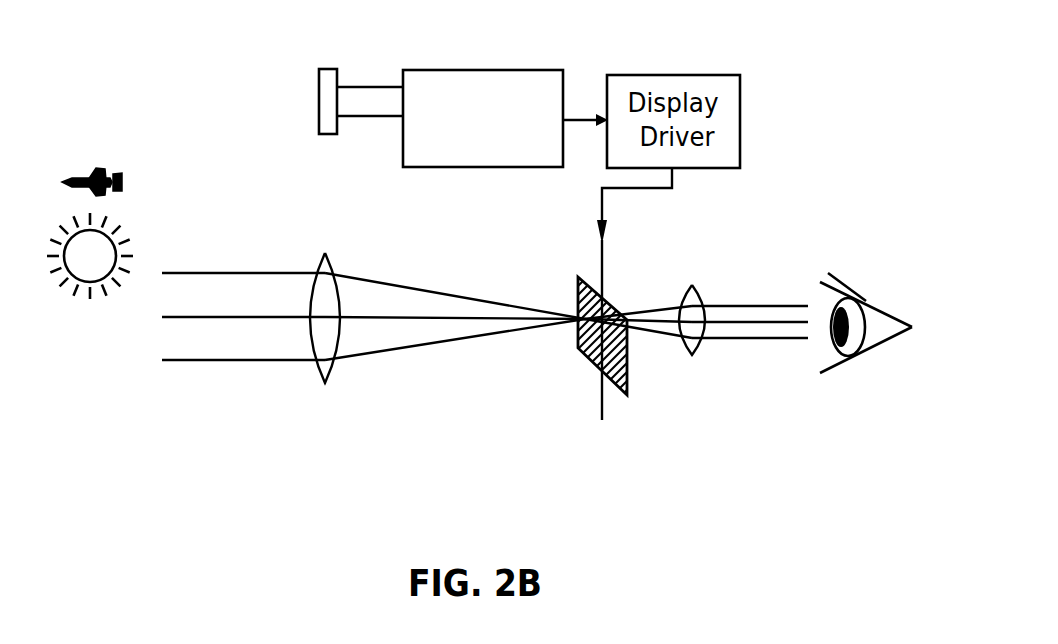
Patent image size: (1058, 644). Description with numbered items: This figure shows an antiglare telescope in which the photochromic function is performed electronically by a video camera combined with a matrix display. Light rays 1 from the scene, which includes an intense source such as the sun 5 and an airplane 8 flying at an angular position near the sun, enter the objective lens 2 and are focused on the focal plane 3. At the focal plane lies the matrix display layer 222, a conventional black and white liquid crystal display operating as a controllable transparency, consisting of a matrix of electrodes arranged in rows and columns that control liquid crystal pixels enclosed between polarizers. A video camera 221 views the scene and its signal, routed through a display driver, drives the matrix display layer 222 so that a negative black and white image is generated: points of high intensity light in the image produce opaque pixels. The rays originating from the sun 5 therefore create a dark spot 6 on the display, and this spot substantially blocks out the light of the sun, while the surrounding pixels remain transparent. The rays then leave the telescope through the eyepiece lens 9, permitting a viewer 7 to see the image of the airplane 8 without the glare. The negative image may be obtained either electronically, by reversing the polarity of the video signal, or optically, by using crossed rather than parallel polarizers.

The light rays 1 is at (288, 272).
The objective lens 2 is at (318, 369).
The focal plane 3 is at (602, 398).
The sun 5 is at (80, 283).
The dark spot 6 is at (578, 300).
The viewer 7 is at (876, 306).
The airplane 8 is at (102, 166).
The eyepiece lens 9 is at (696, 354).
The video camera 221 is at (543, 70).
The matrix display layer 222 is at (615, 298).